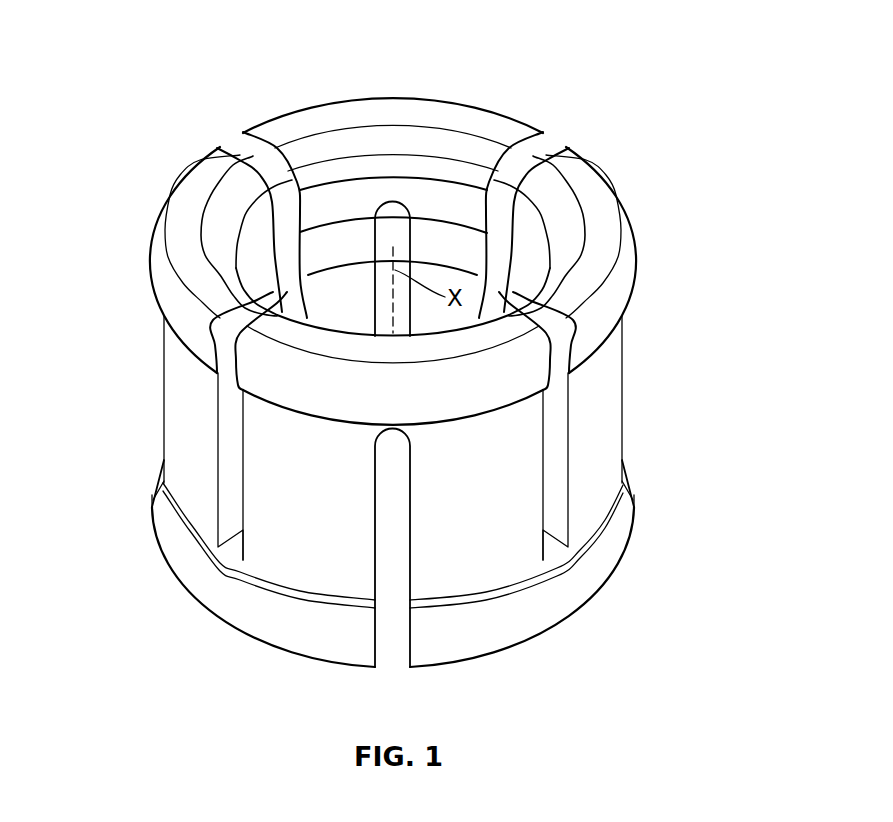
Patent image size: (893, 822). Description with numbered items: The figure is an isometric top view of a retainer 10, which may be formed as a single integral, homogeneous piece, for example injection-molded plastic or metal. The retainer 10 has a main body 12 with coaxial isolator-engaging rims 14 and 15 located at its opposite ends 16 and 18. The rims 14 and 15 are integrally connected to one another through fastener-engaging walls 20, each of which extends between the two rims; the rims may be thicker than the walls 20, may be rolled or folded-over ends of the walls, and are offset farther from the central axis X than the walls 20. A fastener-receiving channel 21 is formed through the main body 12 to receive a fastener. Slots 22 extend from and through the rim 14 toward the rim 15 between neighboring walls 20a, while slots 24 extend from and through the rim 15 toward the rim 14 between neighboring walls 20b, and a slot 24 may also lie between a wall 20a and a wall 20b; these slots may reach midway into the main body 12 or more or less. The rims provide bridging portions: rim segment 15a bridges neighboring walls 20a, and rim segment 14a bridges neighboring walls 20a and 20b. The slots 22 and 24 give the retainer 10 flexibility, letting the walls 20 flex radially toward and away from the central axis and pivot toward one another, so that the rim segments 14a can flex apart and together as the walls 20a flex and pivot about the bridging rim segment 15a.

The retainer 10 is at (152, 58).
The main body 12 is at (612, 160).
The rim 14 is at (535, 640).
The rim segment 14a is at (240, 617).
The rim 15 is at (483, 107).
The rim segment 15a is at (480, 337).
The end 16 is at (262, 648).
The end 18 is at (283, 108).
The walls 20 is at (163, 452).
The wall 20a is at (235, 570).
The wall 20b is at (165, 358).
The fastener-receiving channel 21 is at (422, 197).
The slots 22 is at (383, 200).
The slots 24 is at (236, 132).